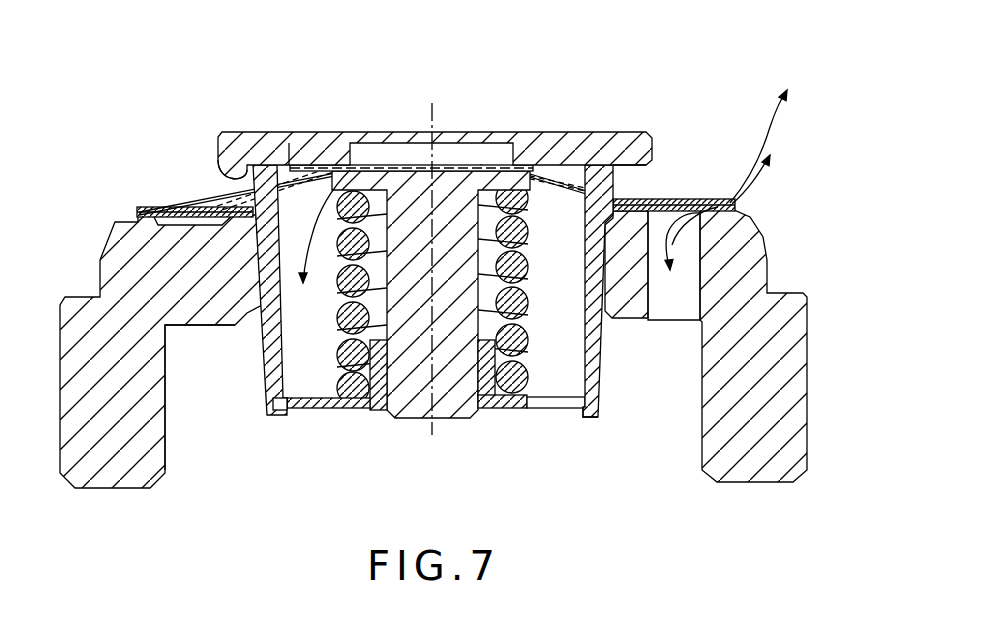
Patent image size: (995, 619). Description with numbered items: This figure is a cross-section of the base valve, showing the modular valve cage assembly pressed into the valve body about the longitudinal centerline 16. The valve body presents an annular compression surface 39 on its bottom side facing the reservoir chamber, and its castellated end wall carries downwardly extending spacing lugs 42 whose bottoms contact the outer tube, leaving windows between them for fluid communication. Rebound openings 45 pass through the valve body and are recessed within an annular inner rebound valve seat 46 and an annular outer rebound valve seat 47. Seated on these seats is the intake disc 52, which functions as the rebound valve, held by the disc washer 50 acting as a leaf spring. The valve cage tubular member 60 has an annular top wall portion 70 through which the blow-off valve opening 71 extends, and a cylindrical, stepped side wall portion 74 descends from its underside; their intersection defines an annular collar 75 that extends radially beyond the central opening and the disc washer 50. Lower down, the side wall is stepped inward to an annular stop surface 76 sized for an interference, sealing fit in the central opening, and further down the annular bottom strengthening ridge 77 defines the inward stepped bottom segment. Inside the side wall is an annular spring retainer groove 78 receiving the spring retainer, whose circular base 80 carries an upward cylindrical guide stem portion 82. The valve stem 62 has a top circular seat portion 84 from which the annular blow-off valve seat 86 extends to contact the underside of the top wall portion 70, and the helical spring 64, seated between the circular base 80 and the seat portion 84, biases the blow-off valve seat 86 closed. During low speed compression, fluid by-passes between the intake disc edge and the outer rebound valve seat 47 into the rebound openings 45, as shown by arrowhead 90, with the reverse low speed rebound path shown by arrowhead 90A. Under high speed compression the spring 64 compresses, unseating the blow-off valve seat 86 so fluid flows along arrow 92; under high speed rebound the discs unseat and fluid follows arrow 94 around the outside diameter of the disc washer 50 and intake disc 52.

The longitudinal centerline 16 is at (433, 124).
The compression surface 39 is at (187, 325).
The spacing lugs 42 is at (803, 377).
The rebound openings 45 is at (675, 298).
The inner rebound valve seat 46 is at (200, 207).
The outer rebound valve seat 47 is at (133, 215).
The disc washer 50 is at (638, 180).
The intake disc 52 is at (143, 207).
The valve cage tubular member 60 is at (402, 231).
The valve stem 62 is at (412, 424).
The helical spring 64 is at (563, 398).
The top wall portion 70 is at (257, 131).
The blow-off valve opening 71 is at (375, 143).
The side wall portion 74 is at (267, 360).
The annular collar 75 is at (220, 177).
The annular stop surface 76 is at (603, 251).
The bottom strengthening ridge 77 is at (608, 302).
The spring retainer groove 78 is at (287, 402).
The circular base 80 is at (558, 413).
The guide stem portion 82 is at (349, 377).
The top circular seat portion 84 is at (330, 272).
The blow-off valve seat 86 is at (289, 143).
The low speed compression by-pass flow arrowhead 90 is at (675, 265).
The low speed by-pass rebound flow arrowhead 90A is at (770, 187).
The high speed compression flow arrow 92 is at (312, 263).
The rebound flow arrow 94 is at (773, 125).